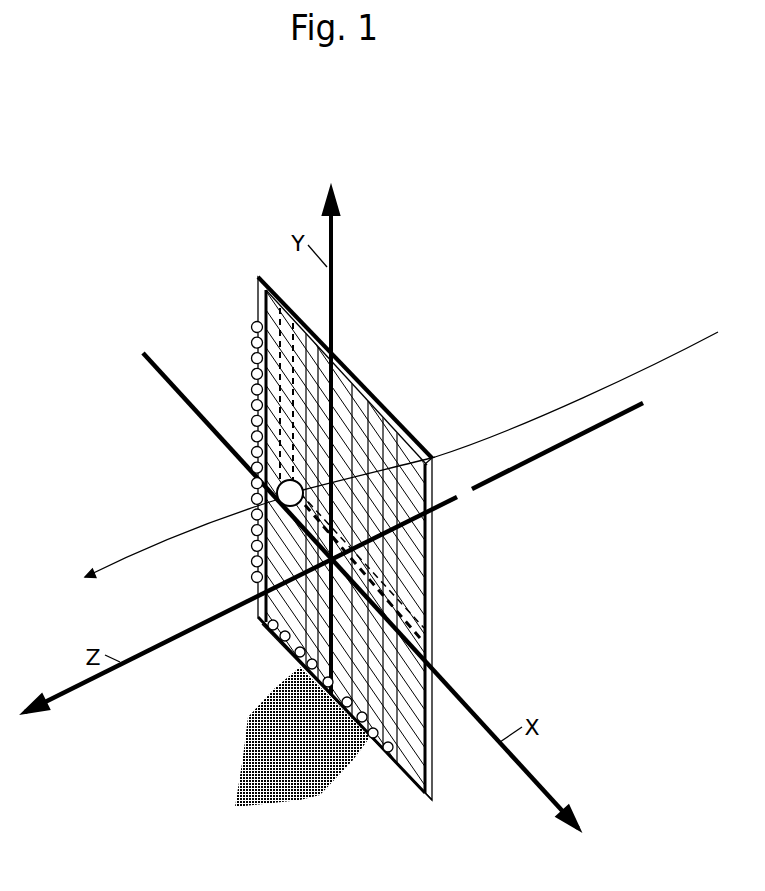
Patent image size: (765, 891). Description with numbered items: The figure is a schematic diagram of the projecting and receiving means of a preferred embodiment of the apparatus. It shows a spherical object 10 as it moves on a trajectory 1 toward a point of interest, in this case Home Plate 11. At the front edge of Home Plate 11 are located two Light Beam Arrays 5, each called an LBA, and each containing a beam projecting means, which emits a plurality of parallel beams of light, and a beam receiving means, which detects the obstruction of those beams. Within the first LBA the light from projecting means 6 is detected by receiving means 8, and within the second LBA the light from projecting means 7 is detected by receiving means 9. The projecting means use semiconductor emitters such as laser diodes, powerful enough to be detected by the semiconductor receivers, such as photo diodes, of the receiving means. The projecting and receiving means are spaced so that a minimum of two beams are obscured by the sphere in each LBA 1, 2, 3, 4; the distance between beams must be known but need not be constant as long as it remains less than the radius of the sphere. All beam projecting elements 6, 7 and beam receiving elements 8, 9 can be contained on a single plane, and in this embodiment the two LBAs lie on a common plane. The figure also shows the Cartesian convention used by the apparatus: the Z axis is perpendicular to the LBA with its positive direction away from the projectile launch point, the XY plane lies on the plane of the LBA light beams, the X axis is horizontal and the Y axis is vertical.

The trajectory 1 is at (633, 373).
The light beam array beams 2 is at (290, 333).
The light beam array beams 3 is at (413, 624).
The light beam array beams 4 is at (407, 605).
The light beam array 5 is at (423, 583).
The projecting means 6 is at (360, 542).
The projecting means 7 is at (383, 542).
The receiving means 8 is at (330, 705).
The receiving means 9 is at (255, 333).
The spherical object 10 is at (258, 490).
The Home Plate 11 is at (282, 738).